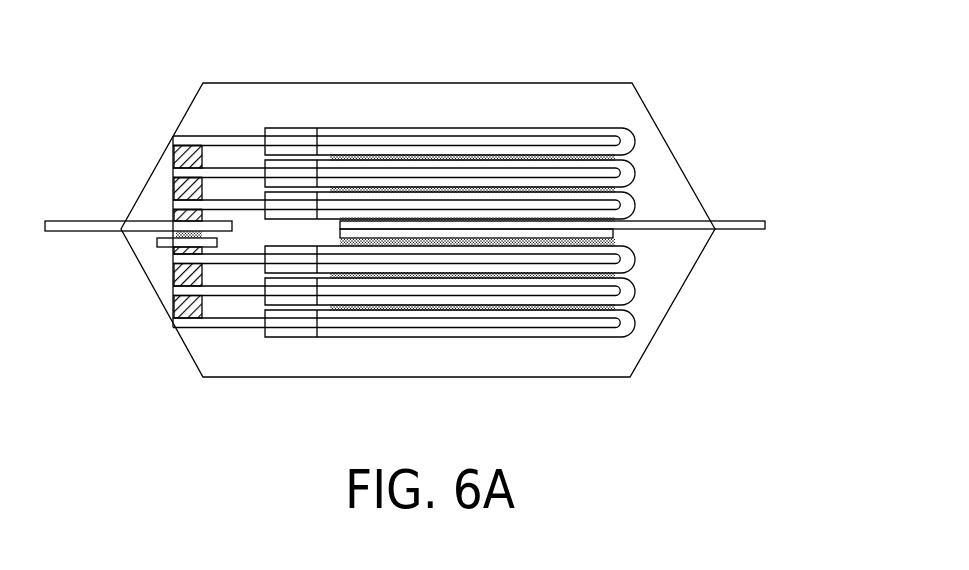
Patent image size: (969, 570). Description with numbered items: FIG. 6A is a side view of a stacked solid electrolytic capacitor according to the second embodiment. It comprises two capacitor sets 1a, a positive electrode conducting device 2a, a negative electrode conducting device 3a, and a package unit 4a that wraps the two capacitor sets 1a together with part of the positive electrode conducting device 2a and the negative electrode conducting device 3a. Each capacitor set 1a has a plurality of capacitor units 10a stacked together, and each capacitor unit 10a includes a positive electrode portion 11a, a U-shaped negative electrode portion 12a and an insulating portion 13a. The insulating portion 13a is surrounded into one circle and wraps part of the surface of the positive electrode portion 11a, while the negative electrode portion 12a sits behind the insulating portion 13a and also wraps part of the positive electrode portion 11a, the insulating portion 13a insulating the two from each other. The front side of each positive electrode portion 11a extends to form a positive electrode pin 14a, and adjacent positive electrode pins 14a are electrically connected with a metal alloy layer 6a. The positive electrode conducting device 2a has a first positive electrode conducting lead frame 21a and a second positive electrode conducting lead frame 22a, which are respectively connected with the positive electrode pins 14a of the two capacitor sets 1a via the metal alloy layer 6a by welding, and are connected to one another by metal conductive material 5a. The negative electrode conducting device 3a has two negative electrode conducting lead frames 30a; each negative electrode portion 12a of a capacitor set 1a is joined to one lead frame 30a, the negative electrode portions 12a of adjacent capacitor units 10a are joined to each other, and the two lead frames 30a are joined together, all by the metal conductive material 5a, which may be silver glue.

The capacitor set 1a is at (492, 190).
The capacitor unit 10a is at (463, 190).
The positive electrode portion 11a is at (232, 139).
The negative electrode portion 12a is at (536, 131).
The insulating portion 13a is at (293, 131).
The positive electrode pin 14a is at (190, 150).
The positive electrode conducting device 2a is at (121, 302).
The first positive electrode conducting lead frame 21a is at (70, 232).
The second positive electrode conducting lead frame 22a is at (157, 242).
The negative electrode conducting device 3a is at (608, 226).
The negative electrode conducting lead frame 30a is at (730, 224).
The package unit 4a is at (215, 352).
The metal conductive material 5a is at (340, 229).
The metal alloy layer 6a is at (174, 214).